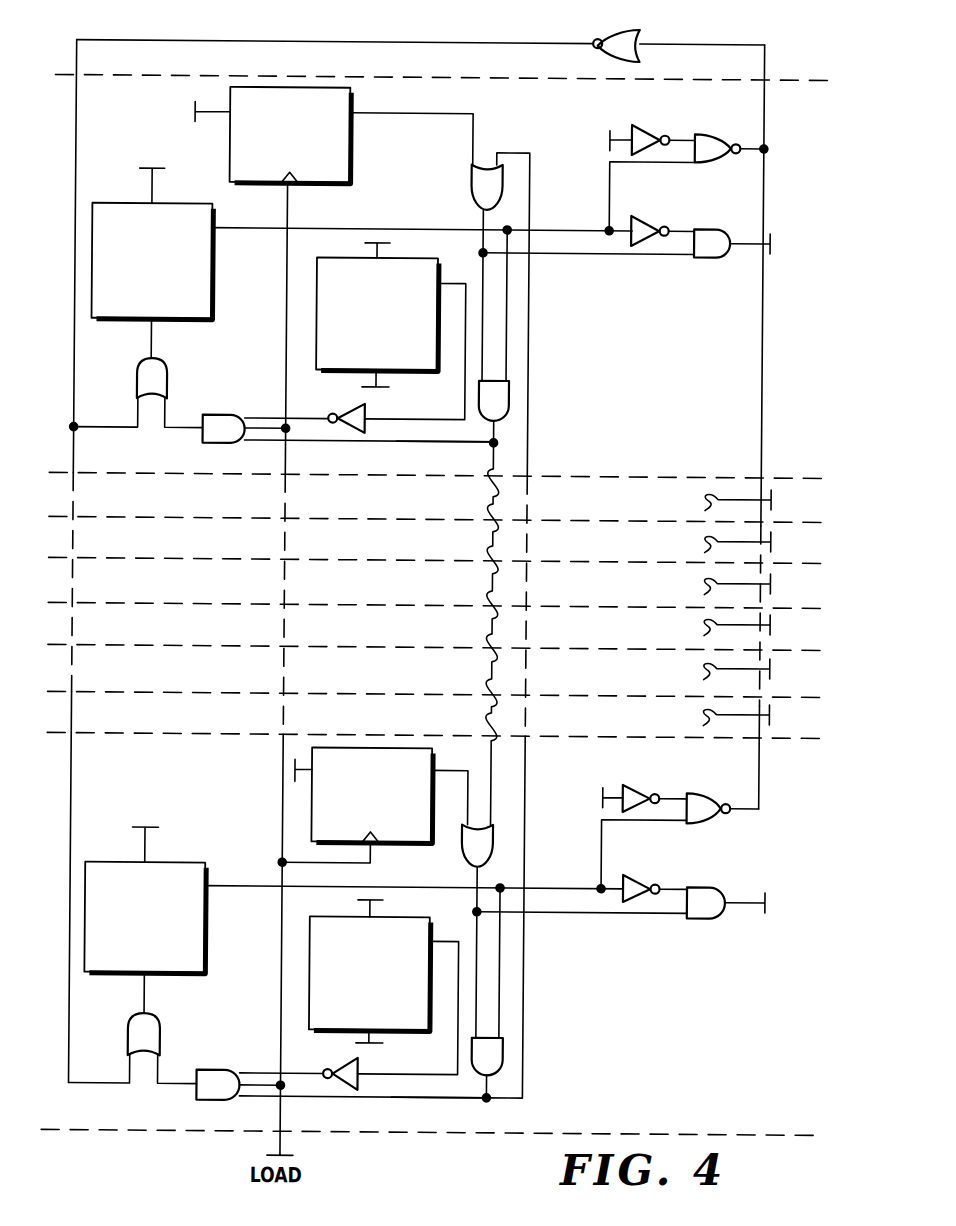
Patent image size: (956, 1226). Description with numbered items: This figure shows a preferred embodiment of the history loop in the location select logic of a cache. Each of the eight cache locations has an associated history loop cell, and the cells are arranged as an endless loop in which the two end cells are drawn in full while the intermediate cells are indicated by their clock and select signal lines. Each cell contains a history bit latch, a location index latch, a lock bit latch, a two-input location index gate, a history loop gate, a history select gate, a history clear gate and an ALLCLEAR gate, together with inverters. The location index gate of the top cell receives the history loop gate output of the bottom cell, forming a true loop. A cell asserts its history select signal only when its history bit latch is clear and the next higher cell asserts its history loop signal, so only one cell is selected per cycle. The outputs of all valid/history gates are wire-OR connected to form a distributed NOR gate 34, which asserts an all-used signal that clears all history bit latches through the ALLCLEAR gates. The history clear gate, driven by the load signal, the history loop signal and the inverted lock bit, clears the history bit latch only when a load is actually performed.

The distributed NOR gate 34 is at (639, 33).